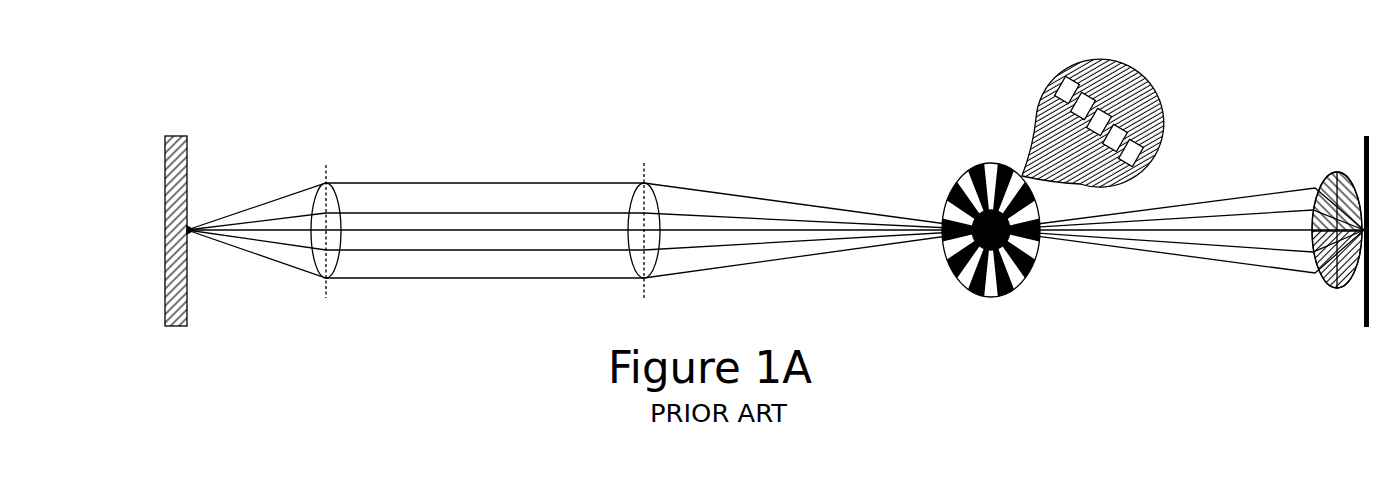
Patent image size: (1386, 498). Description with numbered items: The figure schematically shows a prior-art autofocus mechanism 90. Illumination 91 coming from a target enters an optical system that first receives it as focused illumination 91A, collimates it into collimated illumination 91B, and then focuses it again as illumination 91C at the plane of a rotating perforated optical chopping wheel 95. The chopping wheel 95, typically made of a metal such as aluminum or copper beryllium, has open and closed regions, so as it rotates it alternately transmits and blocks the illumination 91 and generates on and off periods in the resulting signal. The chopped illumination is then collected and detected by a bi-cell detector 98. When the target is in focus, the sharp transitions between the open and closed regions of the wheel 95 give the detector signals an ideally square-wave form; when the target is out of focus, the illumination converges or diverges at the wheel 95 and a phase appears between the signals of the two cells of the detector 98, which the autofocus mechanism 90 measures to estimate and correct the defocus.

The autofocus mechanism 90 is at (150, 98).
The illumination 91 is at (780, 128).
The focused illumination 91A is at (252, 204).
The collimated illumination 91B is at (437, 183).
The focused illumination at the chopping wheel 91C is at (757, 194).
The rotating perforated optical chopping wheel 95 is at (983, 163).
The bi-cell detector 98 is at (1330, 173).